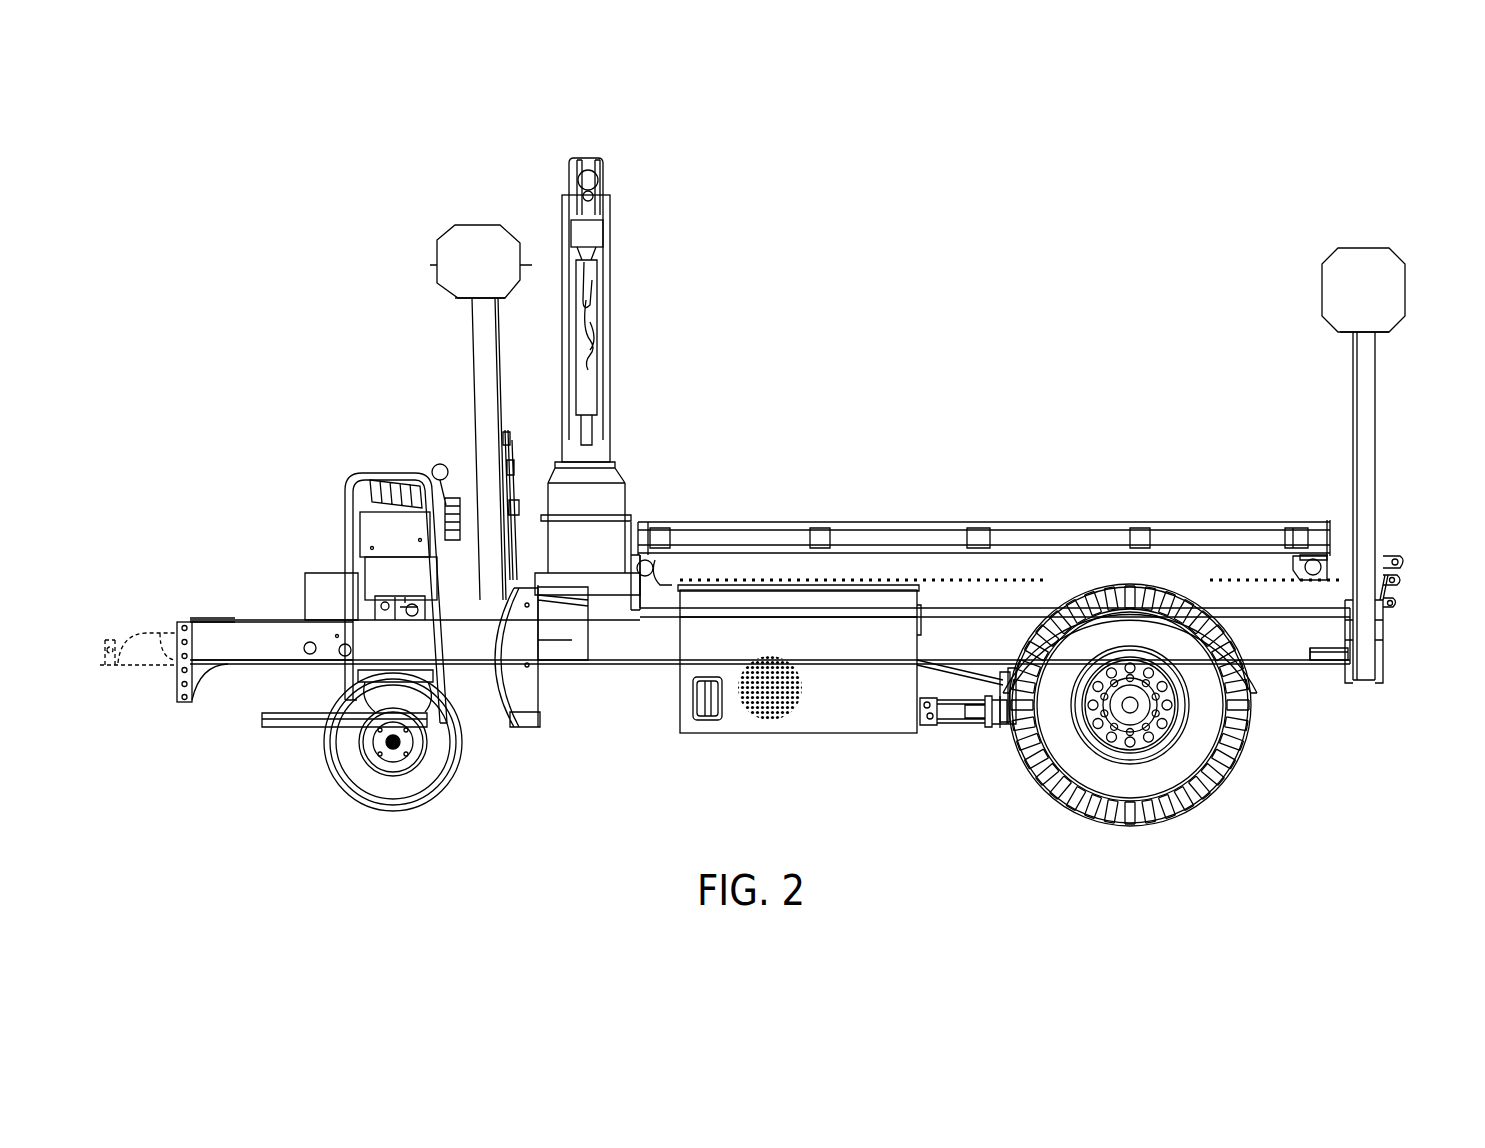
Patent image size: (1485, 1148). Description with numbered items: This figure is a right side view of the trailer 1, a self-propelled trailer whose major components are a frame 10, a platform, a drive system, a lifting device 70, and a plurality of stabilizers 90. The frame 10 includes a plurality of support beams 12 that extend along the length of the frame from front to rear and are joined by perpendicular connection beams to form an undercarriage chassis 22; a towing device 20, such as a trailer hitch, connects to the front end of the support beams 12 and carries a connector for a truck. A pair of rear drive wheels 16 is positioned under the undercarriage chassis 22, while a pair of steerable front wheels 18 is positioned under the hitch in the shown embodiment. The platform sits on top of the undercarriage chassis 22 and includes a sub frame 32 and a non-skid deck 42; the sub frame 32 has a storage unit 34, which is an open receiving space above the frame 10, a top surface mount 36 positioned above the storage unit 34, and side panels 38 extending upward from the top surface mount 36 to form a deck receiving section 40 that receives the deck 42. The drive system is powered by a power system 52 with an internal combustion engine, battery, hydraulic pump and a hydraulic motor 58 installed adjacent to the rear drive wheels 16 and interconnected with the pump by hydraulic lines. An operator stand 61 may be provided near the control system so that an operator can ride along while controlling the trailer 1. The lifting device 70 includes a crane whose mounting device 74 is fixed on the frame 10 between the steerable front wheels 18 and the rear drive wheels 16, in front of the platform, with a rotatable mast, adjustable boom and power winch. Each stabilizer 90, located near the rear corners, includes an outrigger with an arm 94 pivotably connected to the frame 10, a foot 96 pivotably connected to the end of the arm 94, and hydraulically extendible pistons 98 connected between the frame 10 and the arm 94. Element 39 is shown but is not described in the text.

The trailer 1 is at (1262, 165).
The frame 10 is at (620, 640).
The support beams 12 is at (668, 640).
The rear drive wheels 16 is at (1232, 772).
The steerable front wheels 18 is at (338, 772).
The towing device 20 is at (210, 615).
The undercarriage chassis 22 is at (1312, 652).
The sub frame 32 is at (975, 585).
The storage unit 34 is at (1340, 585).
The top surface mount 36 is at (1345, 568).
The side panels 38 is at (722, 535).
The rail end 39 is at (978, 522).
The deck receiving section 40 is at (1152, 520).
The non-skid deck 42 is at (1293, 525).
The power system 52 is at (740, 735).
The hydraulic motor 58 is at (930, 728).
The operator stand 61 is at (262, 714).
The lifting device 70 is at (640, 185).
The mounting device 74 is at (575, 592).
The stabilizers 90 is at (437, 262).
The arm 94 is at (472, 460).
The foot 96 is at (472, 224).
The hydraulically extendible pistons 98 is at (518, 562).